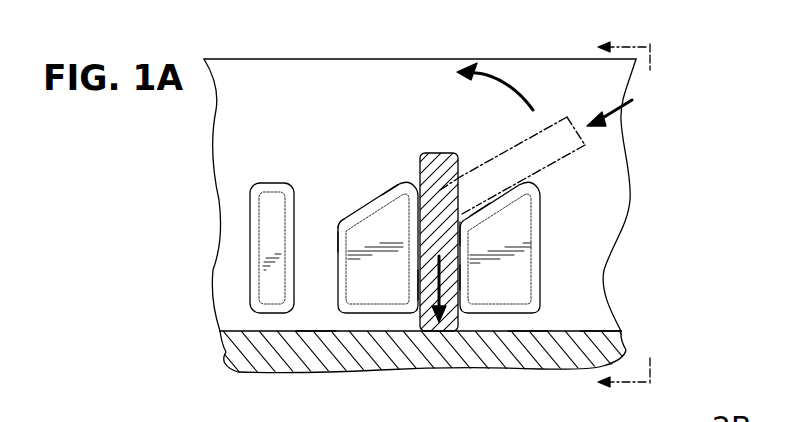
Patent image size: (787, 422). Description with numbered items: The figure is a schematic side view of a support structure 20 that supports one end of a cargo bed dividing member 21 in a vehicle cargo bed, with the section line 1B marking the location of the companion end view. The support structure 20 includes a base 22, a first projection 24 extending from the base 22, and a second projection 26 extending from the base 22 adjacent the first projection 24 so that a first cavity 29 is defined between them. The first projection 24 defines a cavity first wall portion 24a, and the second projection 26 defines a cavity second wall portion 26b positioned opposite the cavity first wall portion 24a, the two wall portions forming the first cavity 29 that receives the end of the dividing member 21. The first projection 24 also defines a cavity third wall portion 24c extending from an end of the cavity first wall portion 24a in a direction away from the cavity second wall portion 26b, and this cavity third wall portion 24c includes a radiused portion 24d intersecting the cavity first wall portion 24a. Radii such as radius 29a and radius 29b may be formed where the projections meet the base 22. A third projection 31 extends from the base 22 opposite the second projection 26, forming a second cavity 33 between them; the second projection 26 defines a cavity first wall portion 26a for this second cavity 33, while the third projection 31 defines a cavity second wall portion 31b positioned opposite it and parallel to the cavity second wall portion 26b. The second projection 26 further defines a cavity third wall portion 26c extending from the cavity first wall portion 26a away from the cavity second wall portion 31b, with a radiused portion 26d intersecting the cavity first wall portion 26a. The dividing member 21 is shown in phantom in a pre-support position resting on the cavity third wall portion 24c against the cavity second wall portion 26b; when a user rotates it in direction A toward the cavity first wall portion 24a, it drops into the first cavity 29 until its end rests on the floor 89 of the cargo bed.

The support structure 20 is at (672, 148).
The cargo bed dividing member 21 is at (433, 153).
The base 22 is at (281, 97).
The first projection 24 is at (505, 286).
The cavity first wall portion 24a is at (462, 276).
The cavity third wall portion 24c is at (476, 204).
The radiused portion 24d is at (462, 222).
The second projection 26 is at (367, 290).
The cavity first wall portion 26a is at (337, 240).
The cavity second wall portion 26b is at (418, 283).
The cavity third wall portion 26c is at (392, 195).
The radiused portion 26d is at (337, 221).
The first cavity 29 is at (432, 250).
The radius 29a is at (316, 287).
The radius 29b is at (524, 318).
The third projection 31 is at (265, 184).
The cavity second wall portion 31b is at (294, 252).
The second cavity 33 is at (335, 318).
The floor 89 is at (593, 331).
The direction of rotation A is at (505, 87).
The section line for end view 1B is at (645, 214).